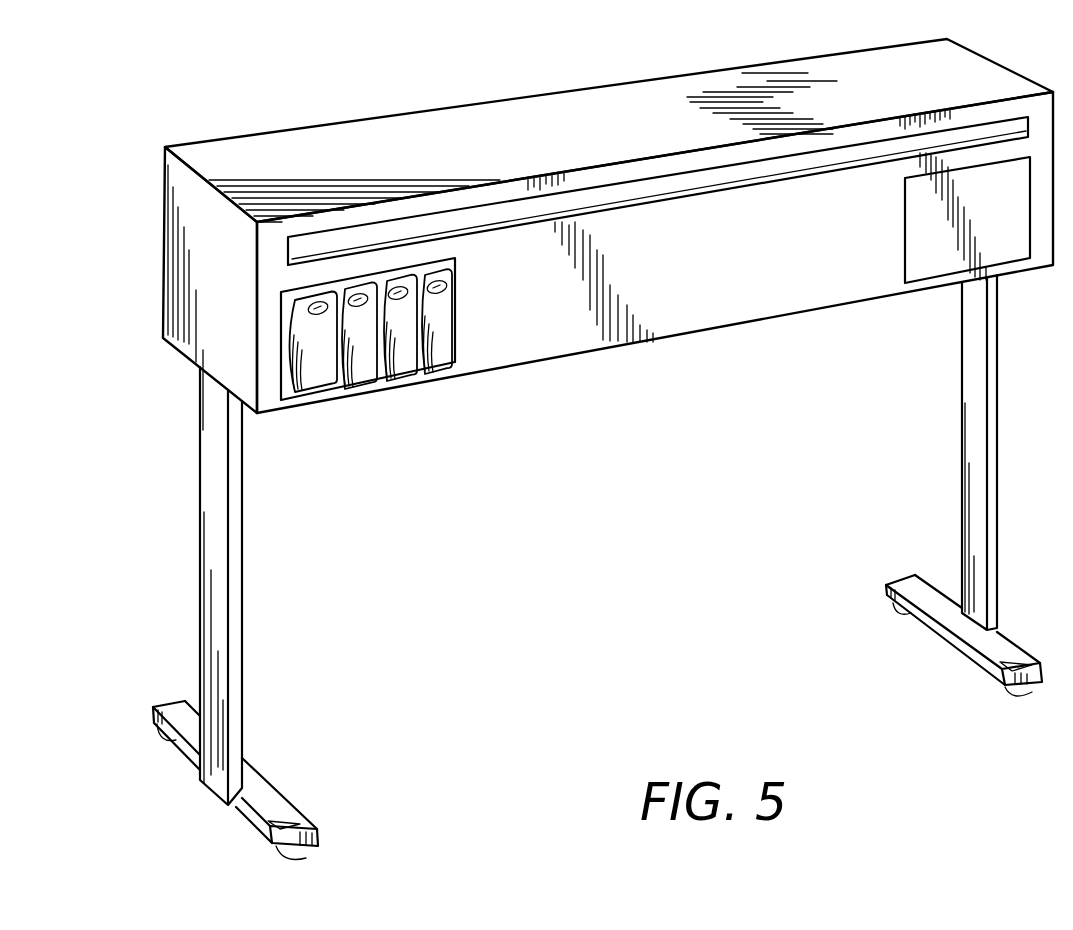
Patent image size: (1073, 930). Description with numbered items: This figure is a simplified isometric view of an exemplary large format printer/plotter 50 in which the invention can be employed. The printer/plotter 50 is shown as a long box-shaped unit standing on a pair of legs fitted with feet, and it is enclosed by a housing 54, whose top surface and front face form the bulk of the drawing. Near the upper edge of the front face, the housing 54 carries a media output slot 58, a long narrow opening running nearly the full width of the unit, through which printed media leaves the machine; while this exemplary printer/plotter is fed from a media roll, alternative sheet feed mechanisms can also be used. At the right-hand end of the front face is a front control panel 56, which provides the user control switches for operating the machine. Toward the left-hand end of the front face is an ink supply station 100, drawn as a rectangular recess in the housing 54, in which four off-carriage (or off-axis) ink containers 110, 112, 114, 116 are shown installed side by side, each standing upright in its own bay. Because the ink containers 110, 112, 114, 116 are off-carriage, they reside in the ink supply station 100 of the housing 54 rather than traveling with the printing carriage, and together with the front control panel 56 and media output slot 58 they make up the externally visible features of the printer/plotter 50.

The console cabinet 50 is at (600, 87).
The housing 54 is at (340, 140).
The front control panel 56 is at (1003, 247).
The media output slot 58 is at (853, 137).
The switch panel 100 is at (455, 360).
The off-carriage ink container 110 is at (318, 376).
The off-carriage ink container 112 is at (355, 374).
The off-carriage ink container 114 is at (395, 368).
The off-carriage ink container 116 is at (438, 359).